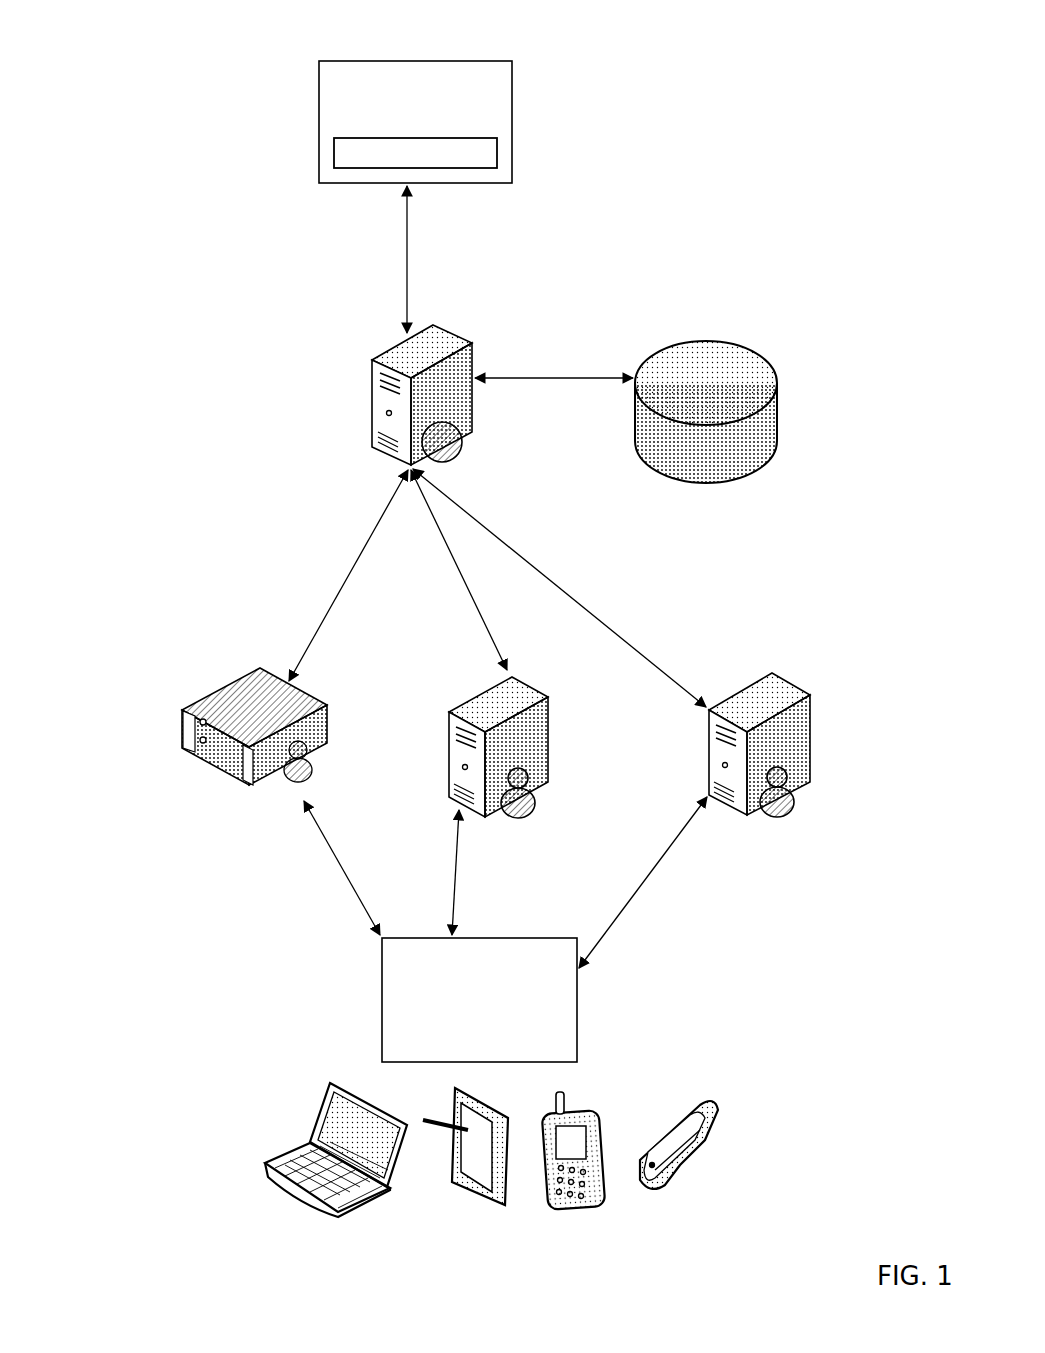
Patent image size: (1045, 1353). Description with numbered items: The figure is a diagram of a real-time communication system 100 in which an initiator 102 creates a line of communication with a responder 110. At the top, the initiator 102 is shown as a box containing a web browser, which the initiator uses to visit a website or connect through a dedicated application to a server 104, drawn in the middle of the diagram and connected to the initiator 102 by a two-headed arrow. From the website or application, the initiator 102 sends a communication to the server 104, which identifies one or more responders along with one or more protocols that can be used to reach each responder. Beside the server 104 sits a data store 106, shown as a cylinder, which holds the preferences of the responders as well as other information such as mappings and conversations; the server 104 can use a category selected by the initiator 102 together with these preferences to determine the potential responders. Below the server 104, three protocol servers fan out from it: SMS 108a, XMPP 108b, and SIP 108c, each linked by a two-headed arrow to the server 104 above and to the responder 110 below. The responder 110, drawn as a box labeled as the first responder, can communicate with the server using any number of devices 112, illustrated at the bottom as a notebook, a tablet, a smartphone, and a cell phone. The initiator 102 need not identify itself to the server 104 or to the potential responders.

The RTC system 100 is at (92, 40).
The initiator 102 is at (319, 130).
The server 104 is at (372, 389).
The data store 106 is at (672, 365).
The SMS 108a is at (215, 707).
The XMPP 108b is at (455, 706).
The SIP 108c is at (760, 677).
The responder 110 is at (410, 995).
The devices 112 is at (308, 1135).